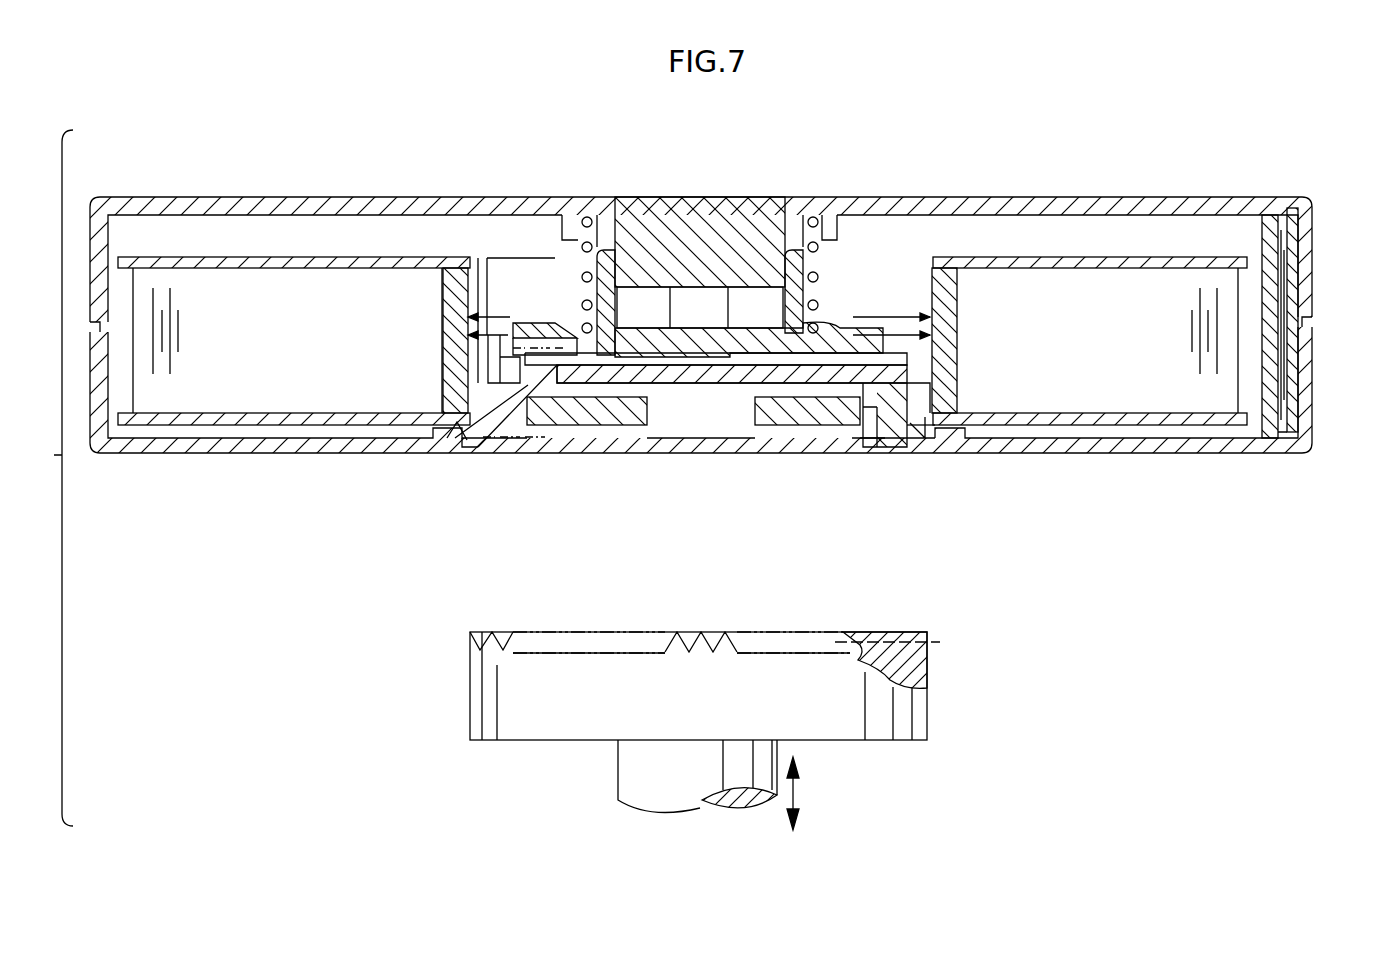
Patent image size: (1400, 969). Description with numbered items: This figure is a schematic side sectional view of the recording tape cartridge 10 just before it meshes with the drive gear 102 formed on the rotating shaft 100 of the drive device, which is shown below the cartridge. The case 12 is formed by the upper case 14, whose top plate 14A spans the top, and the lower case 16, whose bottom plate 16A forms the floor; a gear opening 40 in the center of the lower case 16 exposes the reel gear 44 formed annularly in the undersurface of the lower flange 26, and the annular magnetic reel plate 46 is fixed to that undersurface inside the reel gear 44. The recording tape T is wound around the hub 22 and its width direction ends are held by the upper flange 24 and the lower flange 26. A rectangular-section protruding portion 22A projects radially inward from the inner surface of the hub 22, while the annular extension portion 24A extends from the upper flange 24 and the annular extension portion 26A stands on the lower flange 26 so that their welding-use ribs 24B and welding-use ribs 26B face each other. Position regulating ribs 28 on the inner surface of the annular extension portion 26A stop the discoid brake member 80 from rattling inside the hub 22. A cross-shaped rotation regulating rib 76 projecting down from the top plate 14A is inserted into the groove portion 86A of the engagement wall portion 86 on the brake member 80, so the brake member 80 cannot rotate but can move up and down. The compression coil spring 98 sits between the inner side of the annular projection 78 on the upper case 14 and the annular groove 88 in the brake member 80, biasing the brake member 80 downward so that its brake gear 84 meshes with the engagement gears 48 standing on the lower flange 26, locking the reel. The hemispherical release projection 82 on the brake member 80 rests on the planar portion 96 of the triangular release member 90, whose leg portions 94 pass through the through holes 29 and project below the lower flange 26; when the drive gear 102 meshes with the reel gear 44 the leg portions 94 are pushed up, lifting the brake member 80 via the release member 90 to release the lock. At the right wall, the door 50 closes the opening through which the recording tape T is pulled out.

The recording tape cartridge 10 is at (701, 302).
The case 12 is at (744, 302).
The upper case 14 is at (701, 282).
The top plate 14A is at (1045, 197).
The lower case 16 is at (701, 423).
The bottom plate 16A is at (1050, 453).
The hub 22 is at (958, 348).
The protruding portion 22A is at (925, 322).
The upper flange 24 is at (258, 257).
The annular extension portion 24A is at (466, 268).
The welding-use ribs 24B is at (470, 313).
The lower flange 26 is at (258, 425).
The annular extension portion 26A is at (525, 362).
The welding-use ribs 26B is at (470, 337).
The position regulating ribs 28 is at (522, 368).
The through holes 29 is at (905, 445).
The gear opening 40 is at (470, 452).
The reel gear 44 is at (505, 452).
The reel plate 46 is at (800, 425).
The engagement gears 48 is at (488, 368).
The door 50 is at (1300, 240).
The rotation regulating rib 76 is at (763, 245).
The annular projection 78 is at (838, 235).
The brake member 80 is at (527, 320).
The release projection 82 is at (700, 383).
The brake gear 84 is at (860, 440).
The engagement wall portion 86 is at (790, 273).
The groove portion 86A is at (713, 297).
The annular groove 88 is at (822, 318).
The release member 90 is at (927, 345).
The leg portions 94 is at (915, 440).
The planar portion 96 is at (673, 355).
The compression coil spring 98 is at (592, 245).
The rotating shaft 100 is at (618, 770).
The drive gear 102 is at (890, 632).
The recording tape T is at (1300, 312).